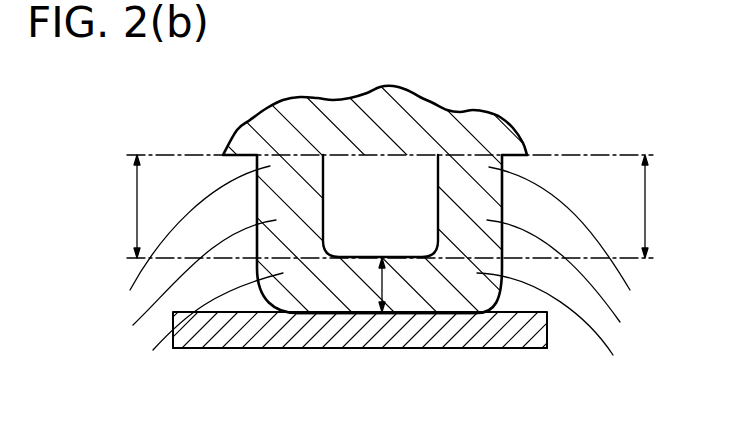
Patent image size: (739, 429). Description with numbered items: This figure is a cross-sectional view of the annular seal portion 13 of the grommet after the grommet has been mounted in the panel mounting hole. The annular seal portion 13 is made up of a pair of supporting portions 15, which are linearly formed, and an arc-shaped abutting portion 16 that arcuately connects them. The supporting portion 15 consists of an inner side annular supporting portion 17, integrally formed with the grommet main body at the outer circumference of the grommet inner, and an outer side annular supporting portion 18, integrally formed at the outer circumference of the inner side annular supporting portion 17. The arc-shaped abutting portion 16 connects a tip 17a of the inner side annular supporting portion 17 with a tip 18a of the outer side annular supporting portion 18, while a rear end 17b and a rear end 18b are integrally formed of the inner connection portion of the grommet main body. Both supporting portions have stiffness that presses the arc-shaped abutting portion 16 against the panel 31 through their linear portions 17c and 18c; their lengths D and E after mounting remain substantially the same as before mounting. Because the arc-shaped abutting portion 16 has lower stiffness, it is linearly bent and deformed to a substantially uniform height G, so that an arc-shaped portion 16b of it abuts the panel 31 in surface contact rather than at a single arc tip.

The annular seal portion 13 is at (443, 109).
The supporting portion 15 is at (197, 190).
The arc-shaped abutting portion 16 is at (329, 321).
The arc-shaped portion 16b is at (367, 305).
The panel 31 is at (445, 340).
The inner side annular supporting portion 17 is at (157, 269).
The tip of the inner side annular supporting portion 17a is at (80, 279).
The rear end of the inner side annular supporting portion 17b is at (130, 290).
The linear portion of the inner side annular supporting portion 17c is at (133, 325).
The outer side annular supporting portion 18 is at (604, 270).
The tip of the outer side annular supporting portion 18a is at (613, 355).
The rear end of the outer side annular supporting portion 18b is at (630, 290).
The linear portion of the outer side annular supporting portion 18c is at (620, 322).
The length of the linear portion of the inner side annular supporting portion after D is at (126, 206).
The length of the linear portion of the outer side annular supporting portion after E is at (656, 206).
The height of the arc-shaped abutting portion after mounting G is at (385, 258).